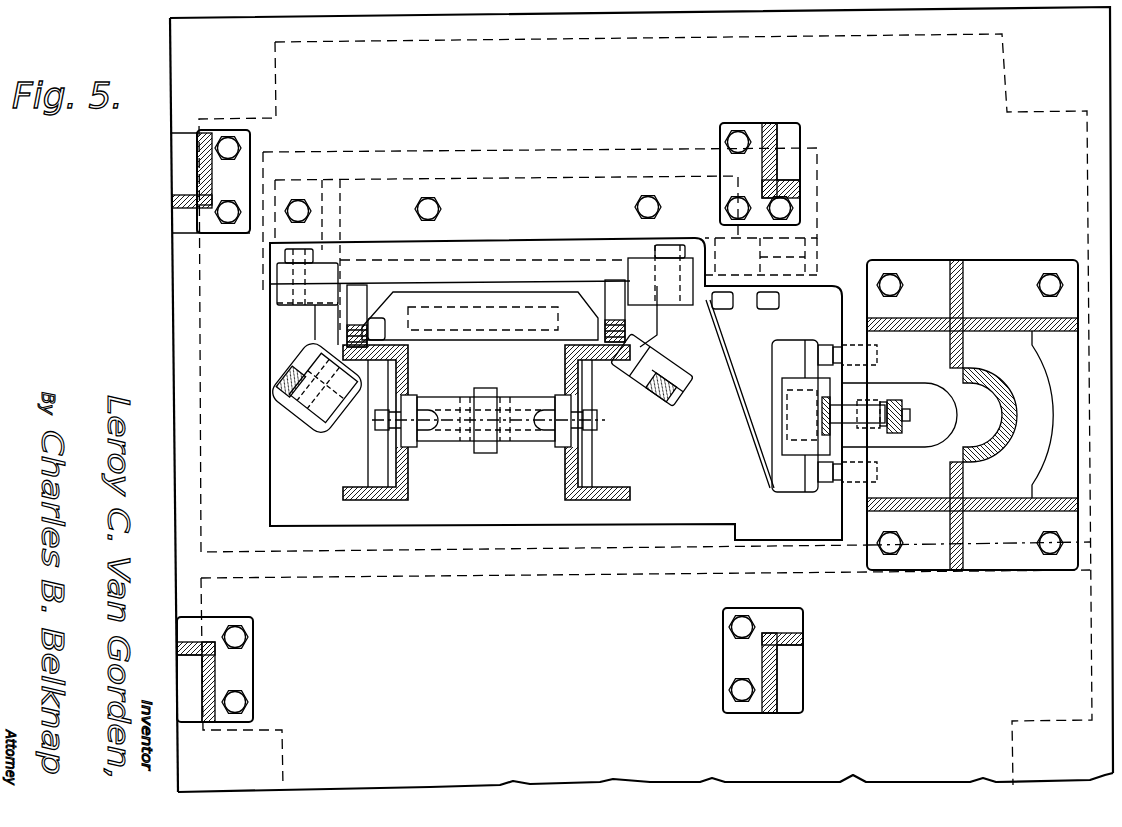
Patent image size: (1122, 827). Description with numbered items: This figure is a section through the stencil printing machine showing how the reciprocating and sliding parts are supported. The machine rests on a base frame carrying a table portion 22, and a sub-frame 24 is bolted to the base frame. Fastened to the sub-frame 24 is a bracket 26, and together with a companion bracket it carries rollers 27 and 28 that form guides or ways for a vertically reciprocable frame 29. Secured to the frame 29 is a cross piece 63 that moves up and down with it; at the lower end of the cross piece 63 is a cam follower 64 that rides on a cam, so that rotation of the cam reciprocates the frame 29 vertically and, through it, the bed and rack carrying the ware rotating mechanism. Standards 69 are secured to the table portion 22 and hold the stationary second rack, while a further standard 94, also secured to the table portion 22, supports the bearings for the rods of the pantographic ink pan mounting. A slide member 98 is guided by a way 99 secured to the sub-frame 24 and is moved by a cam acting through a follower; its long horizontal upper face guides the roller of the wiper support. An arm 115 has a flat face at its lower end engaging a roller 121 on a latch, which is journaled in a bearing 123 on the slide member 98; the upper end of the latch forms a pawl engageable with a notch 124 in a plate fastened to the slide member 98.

The table portion 22 is at (1100, 180).
The sub-frame 24 is at (505, 286).
The bracket 26 is at (653, 292).
The roller 27 is at (357, 285).
The roller 28 is at (342, 343).
The vertically reciprocable frame 29 is at (630, 492).
The cross piece 63 is at (443, 447).
The cam follower 64 is at (492, 452).
The standards 69 is at (250, 143).
The standard 94 is at (1033, 264).
The slide member 98 is at (795, 375).
The way 99 is at (792, 488).
The arm 115 is at (916, 422).
The roller 121 is at (882, 432).
The bearing 123 is at (857, 405).
The notch 124 is at (800, 420).